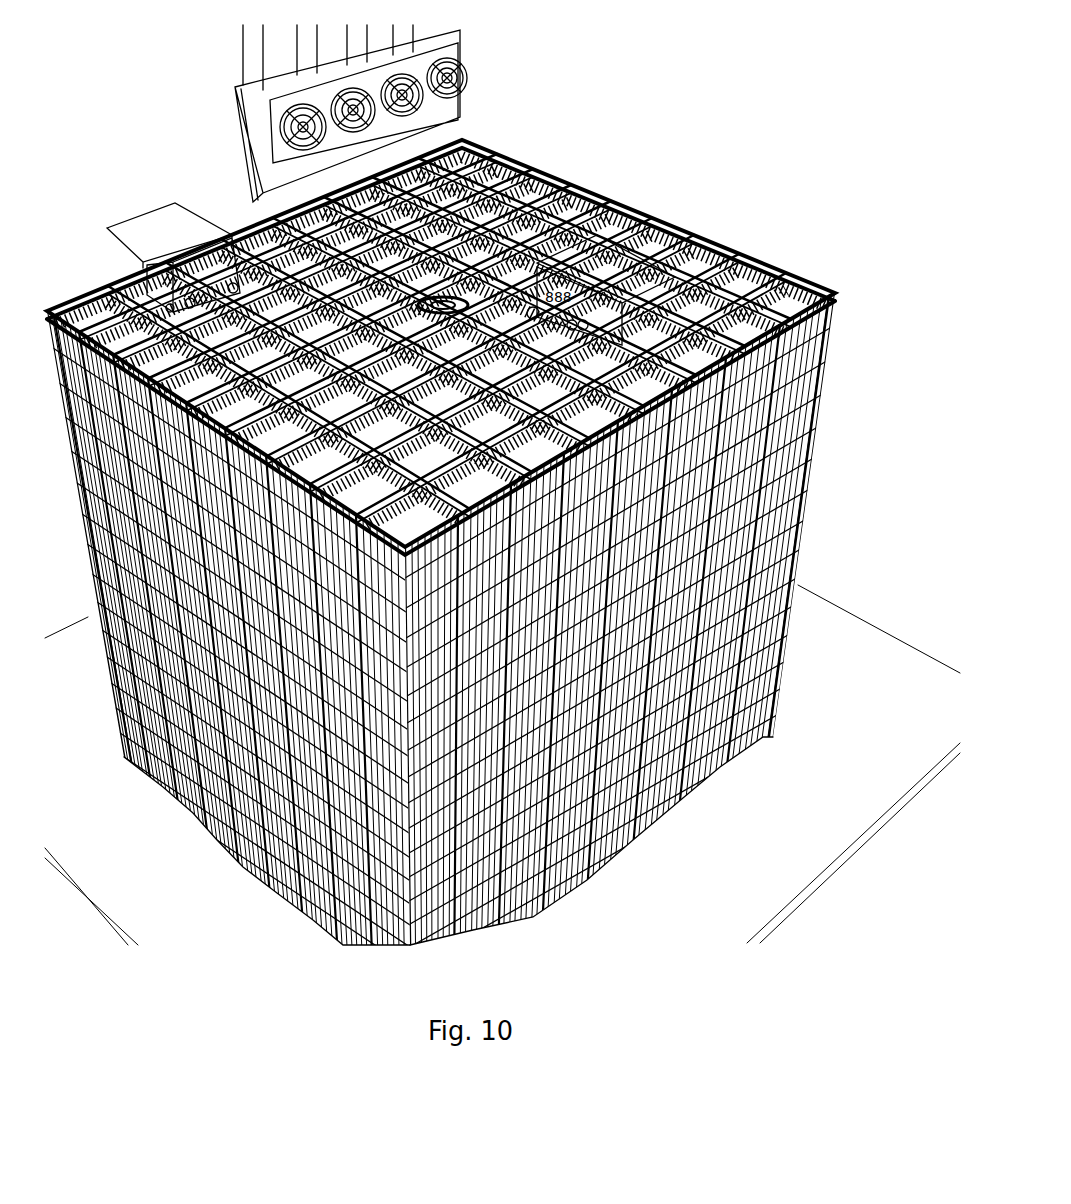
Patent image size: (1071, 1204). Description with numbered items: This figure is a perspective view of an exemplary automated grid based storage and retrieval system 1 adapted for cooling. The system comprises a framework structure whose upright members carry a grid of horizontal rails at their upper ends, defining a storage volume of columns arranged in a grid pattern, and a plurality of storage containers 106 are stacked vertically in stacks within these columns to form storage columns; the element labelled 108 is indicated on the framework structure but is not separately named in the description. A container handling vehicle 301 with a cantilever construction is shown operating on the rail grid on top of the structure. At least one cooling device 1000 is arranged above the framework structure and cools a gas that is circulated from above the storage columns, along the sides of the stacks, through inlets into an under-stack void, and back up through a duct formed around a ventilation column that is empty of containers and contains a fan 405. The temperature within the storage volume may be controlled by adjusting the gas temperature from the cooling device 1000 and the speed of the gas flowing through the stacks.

The automated grid based storage and retrieval system 1 is at (657, 134).
The storage containers 106 is at (745, 412).
The top grid rails 108 is at (740, 252).
The container handling vehicle 301 is at (170, 232).
The fan 405 is at (462, 294).
The cooling device 1000 is at (432, 118).